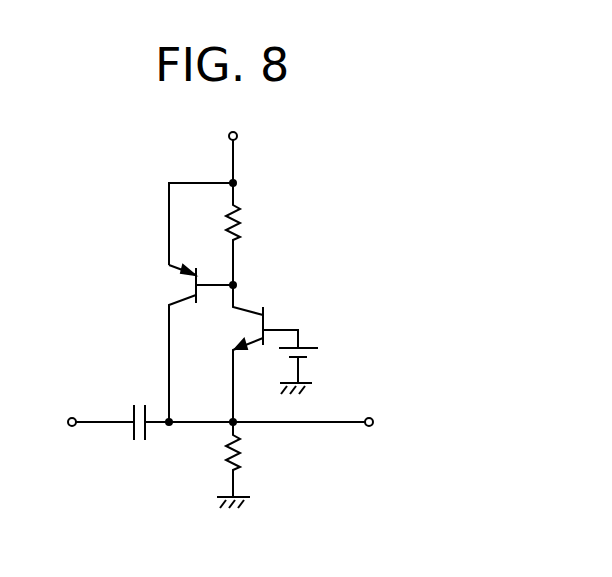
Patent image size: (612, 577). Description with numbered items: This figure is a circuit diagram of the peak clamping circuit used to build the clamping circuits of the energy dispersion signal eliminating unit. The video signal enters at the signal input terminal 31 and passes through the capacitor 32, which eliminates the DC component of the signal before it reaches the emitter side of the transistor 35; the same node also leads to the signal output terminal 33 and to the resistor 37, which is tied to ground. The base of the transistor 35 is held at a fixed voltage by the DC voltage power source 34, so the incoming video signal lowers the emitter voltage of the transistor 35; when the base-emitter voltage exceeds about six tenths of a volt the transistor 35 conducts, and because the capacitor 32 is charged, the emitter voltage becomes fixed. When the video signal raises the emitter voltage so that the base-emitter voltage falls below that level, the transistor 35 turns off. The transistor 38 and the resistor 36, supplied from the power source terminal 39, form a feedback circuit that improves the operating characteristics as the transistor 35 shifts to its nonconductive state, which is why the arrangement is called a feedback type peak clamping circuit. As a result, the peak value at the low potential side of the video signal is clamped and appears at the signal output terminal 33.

The signal input terminal 31 is at (70, 428).
The capacitor 32 is at (140, 443).
The signal output terminal 33 is at (369, 428).
The voltage power source 34 is at (312, 356).
The transistor 35 is at (266, 309).
The resistor 36 is at (240, 222).
The resistor 37 is at (240, 452).
The transistor 38 is at (183, 283).
The power source terminal 39 is at (237, 136).